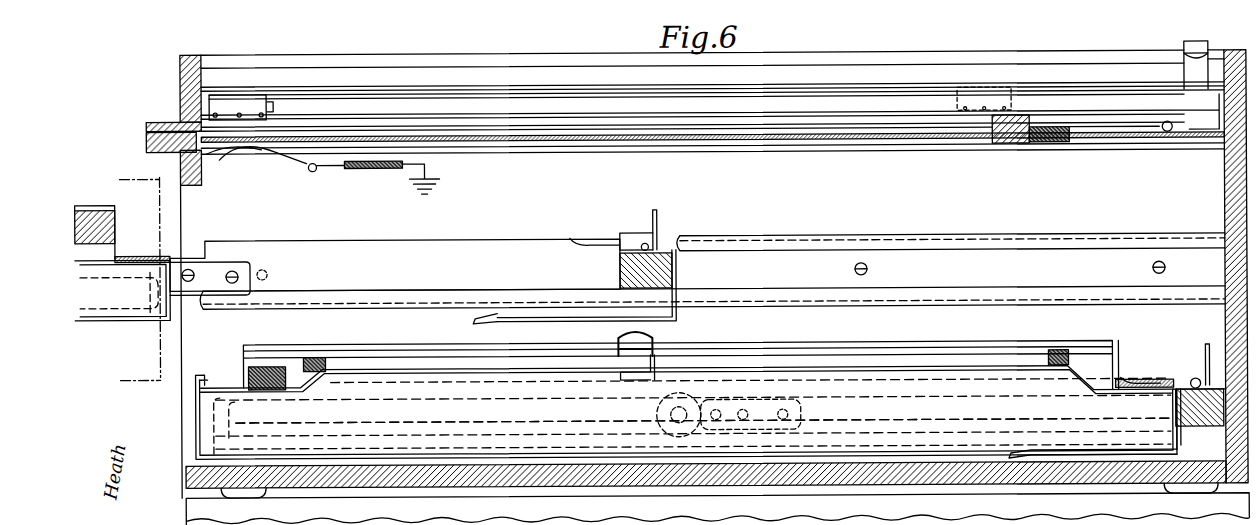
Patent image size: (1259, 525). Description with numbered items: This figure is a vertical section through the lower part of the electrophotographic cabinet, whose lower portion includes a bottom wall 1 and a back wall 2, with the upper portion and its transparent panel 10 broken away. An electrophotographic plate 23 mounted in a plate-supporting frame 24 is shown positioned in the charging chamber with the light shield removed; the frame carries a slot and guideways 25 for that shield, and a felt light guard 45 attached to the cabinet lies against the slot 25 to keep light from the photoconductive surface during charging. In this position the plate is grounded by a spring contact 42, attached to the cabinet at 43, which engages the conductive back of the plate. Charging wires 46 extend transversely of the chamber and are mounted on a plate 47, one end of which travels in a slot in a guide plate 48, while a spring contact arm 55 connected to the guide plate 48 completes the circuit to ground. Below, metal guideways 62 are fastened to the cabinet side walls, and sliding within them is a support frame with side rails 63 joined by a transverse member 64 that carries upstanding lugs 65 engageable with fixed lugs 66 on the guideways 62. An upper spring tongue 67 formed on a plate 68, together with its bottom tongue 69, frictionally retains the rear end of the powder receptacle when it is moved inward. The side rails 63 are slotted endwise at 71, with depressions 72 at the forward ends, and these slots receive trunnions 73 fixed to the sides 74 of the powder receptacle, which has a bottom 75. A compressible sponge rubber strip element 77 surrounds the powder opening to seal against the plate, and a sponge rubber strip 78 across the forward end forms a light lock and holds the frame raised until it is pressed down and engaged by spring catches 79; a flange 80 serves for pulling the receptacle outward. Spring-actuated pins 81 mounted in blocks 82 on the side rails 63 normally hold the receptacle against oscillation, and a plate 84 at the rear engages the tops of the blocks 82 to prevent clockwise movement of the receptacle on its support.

The bottom wall 1 is at (376, 478).
The back wall 2 is at (1225, 214).
The transparent panel 10 is at (139, 278).
The electrophotographic plate 23 is at (578, 141).
The plate-supporting frame 24 is at (117, 222).
The slot and guideways 25 is at (140, 128).
The spring contact 42 is at (270, 156).
The attachment point of spring contact 43 is at (318, 170).
The felt light guard 45 is at (222, 114).
The charging wires 46 is at (276, 105).
The plate 47 is at (1010, 88).
The guide plate 48 is at (862, 89).
The spring contact arm 55 is at (1190, 44).
The guideways 62 is at (960, 360).
The side rails 63 is at (330, 440).
The transverse member 64 is at (1160, 410).
The upstanding lugs 65 is at (1200, 346).
The fixed lugs 66 is at (658, 370).
The upper spring tongue 67 is at (1128, 376).
The plate 68 is at (680, 285).
The bottom tongue 69 is at (1120, 457).
The slots 71 is at (440, 424).
The depressions 72 is at (240, 418).
The trunnions 73 is at (656, 414).
The sides 74 is at (195, 430).
The bottom 75 is at (112, 312).
The sponge rubber strip element 77 is at (320, 356).
The sponge rubber strip 78 is at (278, 364).
The spring catches 79 is at (652, 336).
The flange 80 is at (203, 372).
The spring-actuated pins 81 is at (148, 283).
The blocks 82 is at (795, 432).
The plate 84 is at (1150, 382).